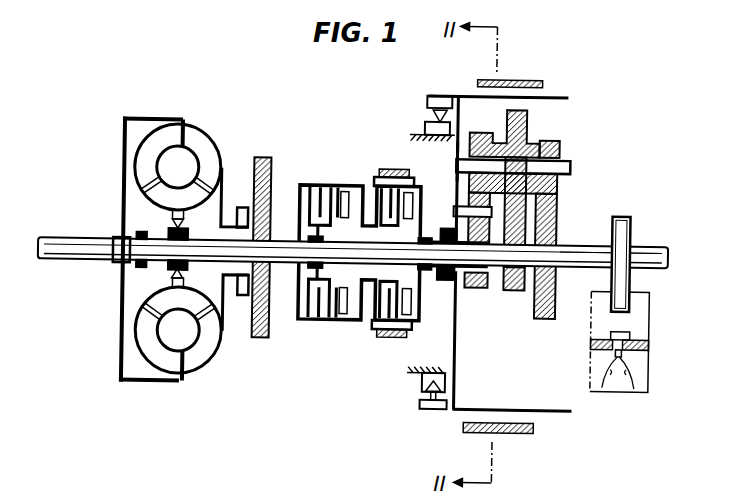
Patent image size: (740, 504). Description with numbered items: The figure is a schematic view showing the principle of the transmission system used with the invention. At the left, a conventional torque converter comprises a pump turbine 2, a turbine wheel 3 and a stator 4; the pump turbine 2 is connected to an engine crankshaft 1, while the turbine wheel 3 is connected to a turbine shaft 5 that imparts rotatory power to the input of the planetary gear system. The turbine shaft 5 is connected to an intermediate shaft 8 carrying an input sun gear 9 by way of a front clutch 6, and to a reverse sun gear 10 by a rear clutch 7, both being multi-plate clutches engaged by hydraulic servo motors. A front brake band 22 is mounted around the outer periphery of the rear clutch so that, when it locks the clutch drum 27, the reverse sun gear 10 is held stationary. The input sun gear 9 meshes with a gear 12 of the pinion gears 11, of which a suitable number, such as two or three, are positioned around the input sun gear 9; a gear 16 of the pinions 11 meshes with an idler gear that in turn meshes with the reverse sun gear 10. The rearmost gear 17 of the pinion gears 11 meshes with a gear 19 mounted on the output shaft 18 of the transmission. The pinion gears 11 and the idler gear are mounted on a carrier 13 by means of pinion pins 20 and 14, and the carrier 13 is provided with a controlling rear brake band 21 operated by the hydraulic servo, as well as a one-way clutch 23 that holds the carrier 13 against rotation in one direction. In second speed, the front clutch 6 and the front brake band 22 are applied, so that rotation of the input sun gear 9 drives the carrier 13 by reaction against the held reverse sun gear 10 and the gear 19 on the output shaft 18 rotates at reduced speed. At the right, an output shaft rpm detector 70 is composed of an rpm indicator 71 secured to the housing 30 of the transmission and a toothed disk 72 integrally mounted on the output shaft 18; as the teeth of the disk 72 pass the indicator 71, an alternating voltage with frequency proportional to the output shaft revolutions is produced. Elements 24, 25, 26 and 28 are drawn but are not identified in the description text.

The engine crankshaft 1 is at (55, 265).
The pump turbine 2 is at (205, 143).
The turbine wheel 3 is at (149, 153).
The stator 4 is at (162, 201).
The turbine shaft 5 is at (275, 266).
The front clutch 6 is at (312, 322).
The rear clutch 7 is at (369, 321).
The intermediate shaft 8 is at (438, 273).
The input sun gear 9 is at (514, 289).
The reverse sun gear 10 is at (480, 287).
The pinion gears 11 is at (537, 139).
The gear 12 is at (527, 110).
The carrier 13 is at (455, 159).
The pinion pin 14 is at (455, 209).
The gear 16 is at (474, 129).
The rearmost gear 17 is at (560, 147).
The output shaft 18 is at (584, 265).
The gear 19 is at (558, 218).
The pinion pin 20 is at (570, 164).
The controlling brake band 21 is at (512, 78).
The brake band means 22 is at (388, 169).
The one-way clutch 23 is at (425, 121).
The clutch housing upper 24 is at (307, 185).
The piston 25 is at (345, 192).
The plate stem 26 is at (311, 272).
The clutch drum 27 is at (374, 334).
The piston 28 is at (405, 315).
The housing 30 is at (645, 332).
The output shaft rpm detector 70 is at (604, 389).
The rpm indicator 71 is at (600, 330).
The toothed disk 72 is at (628, 228).